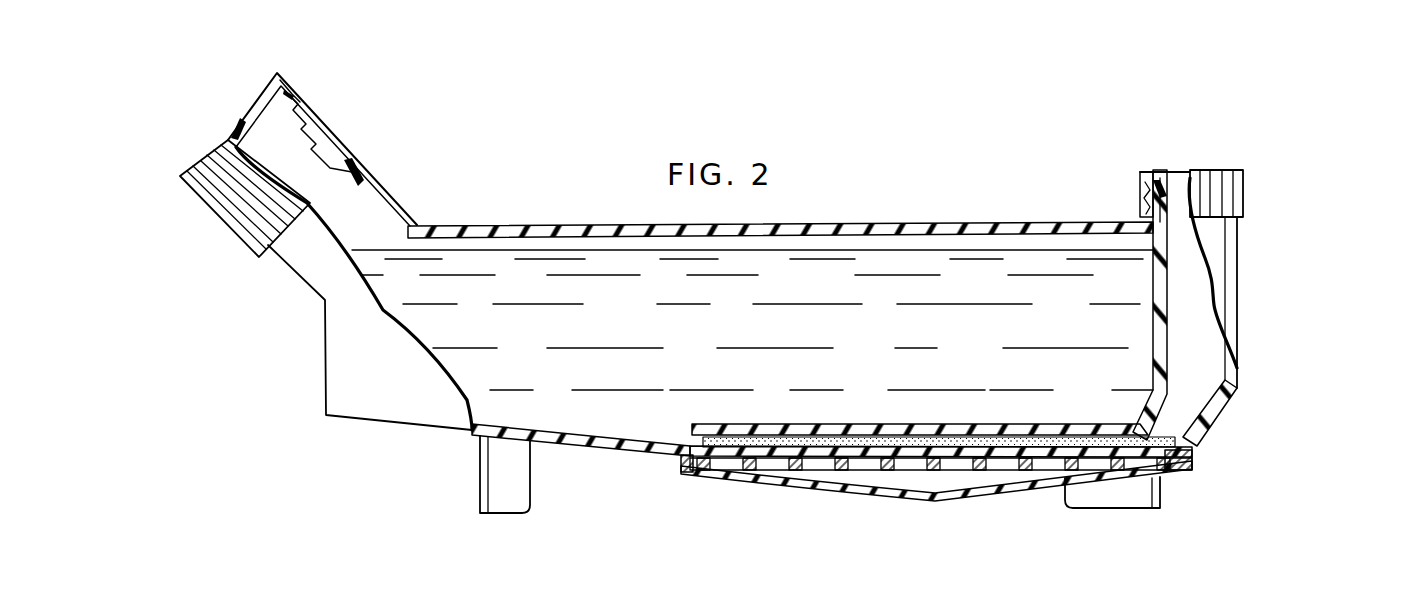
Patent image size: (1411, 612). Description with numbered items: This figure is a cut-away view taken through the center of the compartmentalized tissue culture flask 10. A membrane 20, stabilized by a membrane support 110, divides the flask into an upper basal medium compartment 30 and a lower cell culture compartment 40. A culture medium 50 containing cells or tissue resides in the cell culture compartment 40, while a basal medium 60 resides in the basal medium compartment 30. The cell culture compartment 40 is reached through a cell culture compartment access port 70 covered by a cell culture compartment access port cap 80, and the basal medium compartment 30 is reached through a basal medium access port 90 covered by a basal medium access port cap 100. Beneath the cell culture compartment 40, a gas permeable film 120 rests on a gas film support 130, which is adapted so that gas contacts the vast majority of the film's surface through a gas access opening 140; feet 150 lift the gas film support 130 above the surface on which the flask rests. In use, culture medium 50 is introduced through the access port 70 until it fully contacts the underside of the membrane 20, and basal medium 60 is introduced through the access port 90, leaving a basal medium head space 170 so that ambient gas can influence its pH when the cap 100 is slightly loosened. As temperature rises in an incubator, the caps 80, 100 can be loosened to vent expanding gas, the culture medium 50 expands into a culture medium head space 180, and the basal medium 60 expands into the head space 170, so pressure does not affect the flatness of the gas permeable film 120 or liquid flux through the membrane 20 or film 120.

The compartmentalized tissue culture flask 10 is at (323, 358).
The membrane 20 is at (722, 428).
The basal medium compartment 30 is at (385, 188).
The cell culture compartment 40 is at (1240, 268).
The culture medium 50 is at (1200, 423).
The basal medium 60 is at (872, 342).
The cell culture compartment access port 70 is at (1180, 190).
The cell culture compartment access port cap 80 is at (1240, 174).
The basal medium access port 90 is at (260, 132).
The basal medium access port cap 100 is at (198, 198).
The membrane support 110 is at (1010, 433).
The gas permeable film 120 is at (710, 477).
The gas film support 130 is at (802, 472).
The gas access opening 140 is at (937, 499).
The feet 150 is at (478, 513).
The basal medium head space 170 is at (843, 243).
The culture medium head space 180 is at (1190, 353).